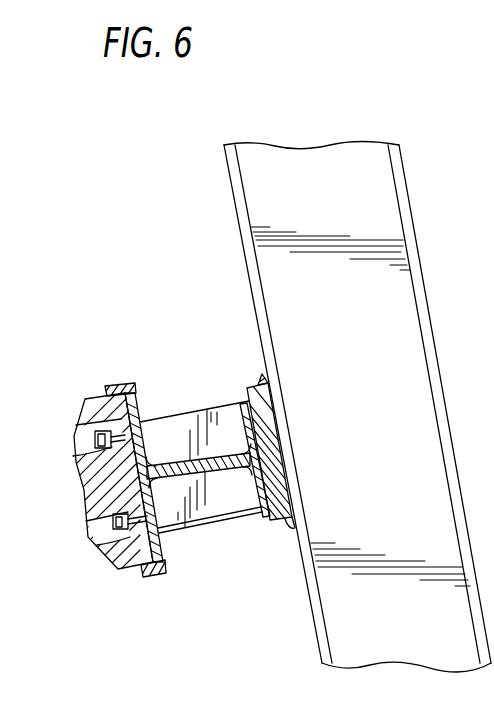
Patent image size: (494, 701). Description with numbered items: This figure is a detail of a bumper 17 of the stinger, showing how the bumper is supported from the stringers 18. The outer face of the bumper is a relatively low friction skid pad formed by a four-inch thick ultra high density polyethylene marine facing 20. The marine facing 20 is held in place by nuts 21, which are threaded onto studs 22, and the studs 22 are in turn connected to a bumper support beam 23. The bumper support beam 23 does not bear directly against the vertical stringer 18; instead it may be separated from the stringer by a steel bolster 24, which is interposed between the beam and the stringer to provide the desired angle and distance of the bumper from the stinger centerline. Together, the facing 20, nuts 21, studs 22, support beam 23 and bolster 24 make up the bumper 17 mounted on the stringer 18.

The bumper 17 is at (233, 556).
The stringers 18 is at (272, 270).
The ultra high density polyethylene marine facing 20 is at (90, 398).
The nuts 21 is at (75, 458).
The studs 22 is at (115, 386).
The bumper support beam 23 is at (203, 400).
The steel bolster 24 is at (272, 415).